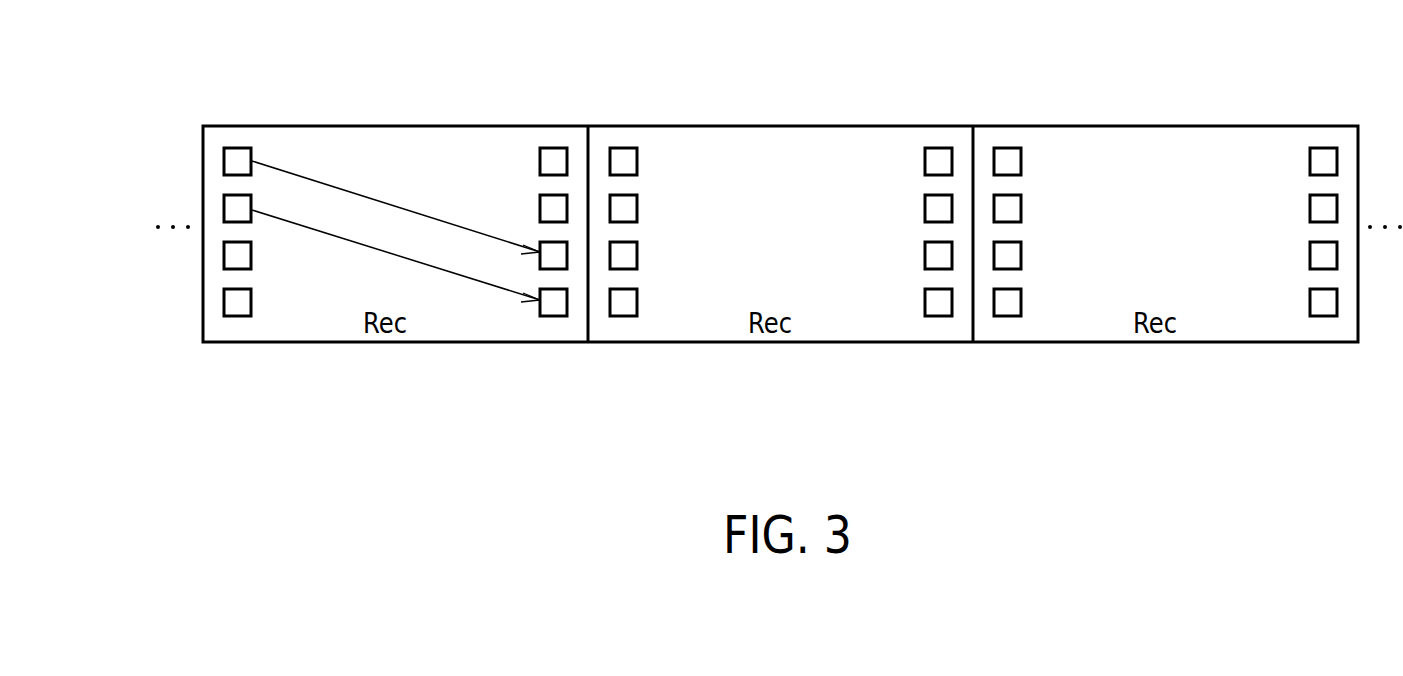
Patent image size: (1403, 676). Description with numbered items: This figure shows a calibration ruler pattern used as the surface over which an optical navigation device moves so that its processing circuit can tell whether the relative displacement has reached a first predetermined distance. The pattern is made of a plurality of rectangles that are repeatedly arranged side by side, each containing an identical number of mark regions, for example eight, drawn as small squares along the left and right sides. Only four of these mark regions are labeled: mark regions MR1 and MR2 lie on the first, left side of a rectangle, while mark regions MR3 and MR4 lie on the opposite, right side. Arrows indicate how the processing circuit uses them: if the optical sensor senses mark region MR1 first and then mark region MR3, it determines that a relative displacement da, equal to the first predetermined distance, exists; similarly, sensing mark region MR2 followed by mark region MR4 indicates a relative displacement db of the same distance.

The mark region MR1 is at (240, 155).
The mark region MR2 is at (224, 206).
The mark region MR3 is at (568, 260).
The mark region MR4 is at (553, 303).
The relative displacement da is at (396, 207).
The relative displacement db is at (396, 256).